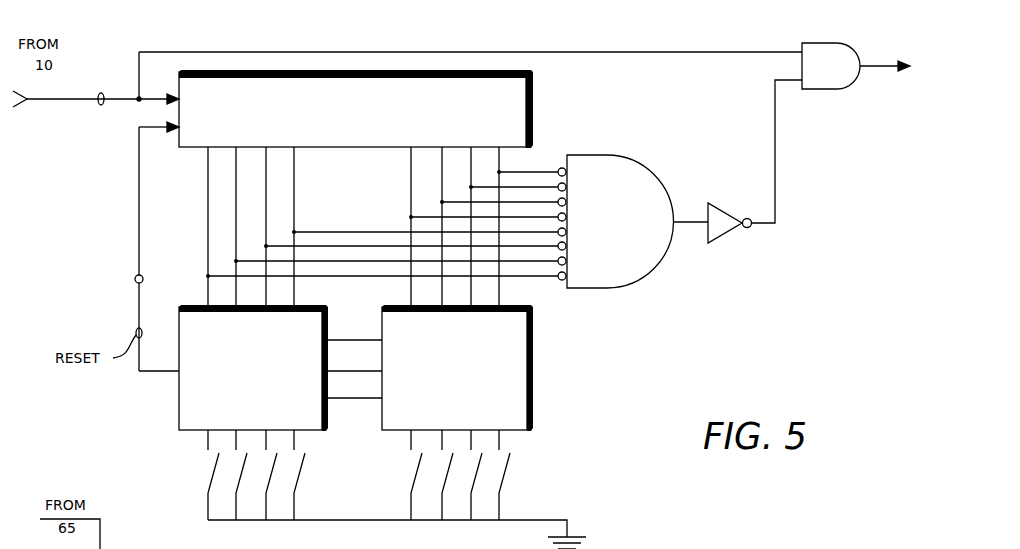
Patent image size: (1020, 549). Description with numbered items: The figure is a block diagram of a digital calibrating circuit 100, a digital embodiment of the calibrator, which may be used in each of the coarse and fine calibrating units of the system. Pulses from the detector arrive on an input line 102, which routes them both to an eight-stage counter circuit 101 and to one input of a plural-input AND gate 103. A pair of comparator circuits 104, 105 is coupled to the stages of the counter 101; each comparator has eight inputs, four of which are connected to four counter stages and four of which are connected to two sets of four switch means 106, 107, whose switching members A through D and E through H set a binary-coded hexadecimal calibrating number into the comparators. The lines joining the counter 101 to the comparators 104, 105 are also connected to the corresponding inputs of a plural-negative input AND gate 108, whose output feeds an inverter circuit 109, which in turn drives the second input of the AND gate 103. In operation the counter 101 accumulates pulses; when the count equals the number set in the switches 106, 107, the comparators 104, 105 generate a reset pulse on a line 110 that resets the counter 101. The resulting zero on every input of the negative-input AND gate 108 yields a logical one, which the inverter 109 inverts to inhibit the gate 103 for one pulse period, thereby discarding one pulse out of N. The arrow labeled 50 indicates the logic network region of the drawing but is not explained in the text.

The decoding logic network 50 is at (504, 203).
The digital calibrating circuit 100 is at (438, 40).
The eight-stage counter circuit 101 is at (520, 110).
The input line 102 is at (98, 105).
The plural-input AND gate 103 is at (845, 55).
The comparator circuit 104 is at (192, 394).
The comparator circuit 105 is at (520, 405).
The switch means 106 is at (202, 508).
The switch means 107 is at (518, 516).
The plural-negative input AND gate 108 is at (606, 166).
The inverter circuit 109 is at (720, 212).
The line 110 is at (135, 278).